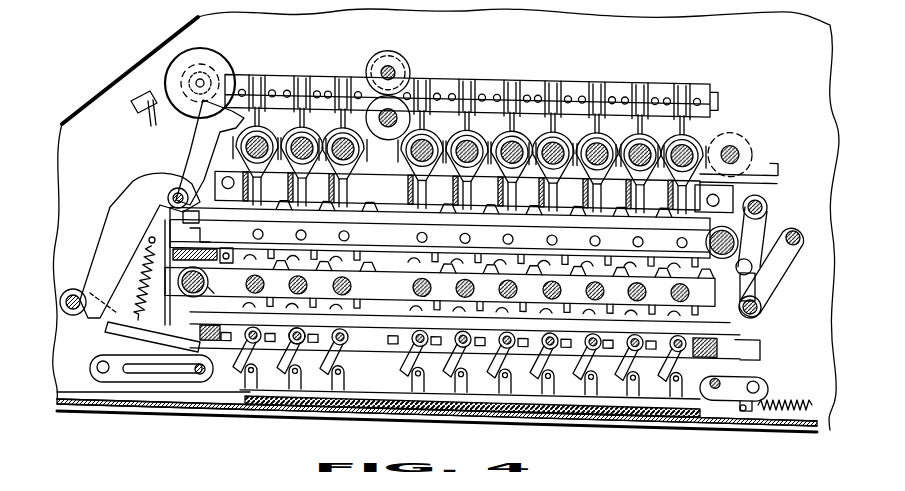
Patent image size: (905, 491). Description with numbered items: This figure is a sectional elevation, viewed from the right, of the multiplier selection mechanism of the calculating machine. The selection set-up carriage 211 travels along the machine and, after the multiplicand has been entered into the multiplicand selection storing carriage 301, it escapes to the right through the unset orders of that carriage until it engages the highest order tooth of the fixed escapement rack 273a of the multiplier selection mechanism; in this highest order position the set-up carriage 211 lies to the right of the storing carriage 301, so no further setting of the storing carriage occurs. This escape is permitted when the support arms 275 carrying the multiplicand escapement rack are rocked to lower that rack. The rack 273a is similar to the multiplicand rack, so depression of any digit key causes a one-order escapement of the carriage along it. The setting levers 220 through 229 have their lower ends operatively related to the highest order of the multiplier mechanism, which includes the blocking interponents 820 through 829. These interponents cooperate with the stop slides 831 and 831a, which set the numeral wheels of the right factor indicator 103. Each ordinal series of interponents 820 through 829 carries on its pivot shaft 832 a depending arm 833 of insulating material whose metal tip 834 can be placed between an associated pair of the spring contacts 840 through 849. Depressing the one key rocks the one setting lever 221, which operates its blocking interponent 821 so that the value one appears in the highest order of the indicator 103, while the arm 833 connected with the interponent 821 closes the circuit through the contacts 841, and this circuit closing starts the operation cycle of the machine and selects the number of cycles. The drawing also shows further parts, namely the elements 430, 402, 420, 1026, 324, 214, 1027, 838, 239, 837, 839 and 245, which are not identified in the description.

The right factor indicator 103 is at (159, 55).
The terminal bar 430 is at (503, 64).
The roller 402 is at (388, 108).
The clamp bar 420 is at (398, 191).
The multiplicand selection storing carriage 301 is at (394, 239).
The selection set-up carriage 211 is at (400, 288).
The lever 1026 is at (140, 245).
The pivot 324 is at (183, 188).
The spring 214 is at (150, 270).
The support arms 275 is at (95, 330).
The link 1027 is at (178, 325).
The block 838 is at (454, 344).
The fixed escapement rack 273a is at (212, 281).
The blocking interponent 820 is at (225, 289).
The setting lever 220 is at (268, 285).
The "1" setting lever 221 is at (311, 284).
The blocking interponent 821 is at (285, 307).
The setting lever 229 is at (649, 292).
The lever 239 is at (788, 268).
The pivot shaft 832 is at (283, 335).
The lever 837 is at (454, 354).
The bracket 839 is at (395, 340).
The metal tip 834 is at (650, 392).
The depending arm 833 is at (442, 379).
The blocking interponent 829 is at (660, 358).
The lever 245 is at (770, 362).
The stop slide 831a is at (118, 375).
The stop slide 831 is at (170, 378).
The spring contacts 840 is at (253, 367).
The contacts 841 is at (295, 369).
The spring contacts 849 is at (676, 387).